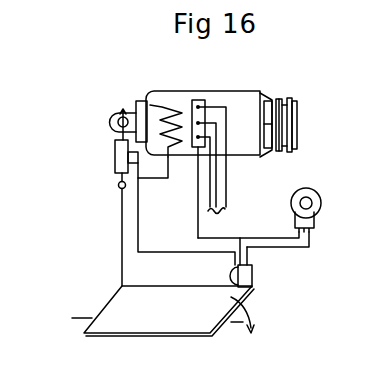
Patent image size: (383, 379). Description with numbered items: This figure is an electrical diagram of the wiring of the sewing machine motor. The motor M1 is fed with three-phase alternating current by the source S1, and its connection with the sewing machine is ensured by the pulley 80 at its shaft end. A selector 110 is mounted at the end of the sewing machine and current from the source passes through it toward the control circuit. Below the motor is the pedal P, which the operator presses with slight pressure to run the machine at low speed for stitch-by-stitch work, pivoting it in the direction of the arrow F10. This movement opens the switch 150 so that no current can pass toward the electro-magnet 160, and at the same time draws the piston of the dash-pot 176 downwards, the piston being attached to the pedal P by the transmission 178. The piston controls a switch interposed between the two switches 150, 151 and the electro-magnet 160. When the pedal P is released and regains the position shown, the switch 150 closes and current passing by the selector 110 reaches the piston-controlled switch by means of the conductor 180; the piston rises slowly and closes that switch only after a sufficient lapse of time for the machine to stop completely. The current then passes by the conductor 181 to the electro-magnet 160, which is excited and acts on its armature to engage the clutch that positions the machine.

The motor M1 is at (246, 98).
The electro-magnet 160 is at (150, 105).
The dash-pot 176 is at (115, 146).
The transmission 178 is at (121, 206).
The conductor 180 is at (150, 252).
The conductor 181 is at (170, 177).
The pulley 80 is at (288, 100).
The selector 110 is at (305, 188).
The source S1 is at (226, 210).
The switch 150 is at (254, 273).
The switch 151 is at (235, 274).
The pedal P is at (160, 292).
The arrow F10 is at (254, 315).